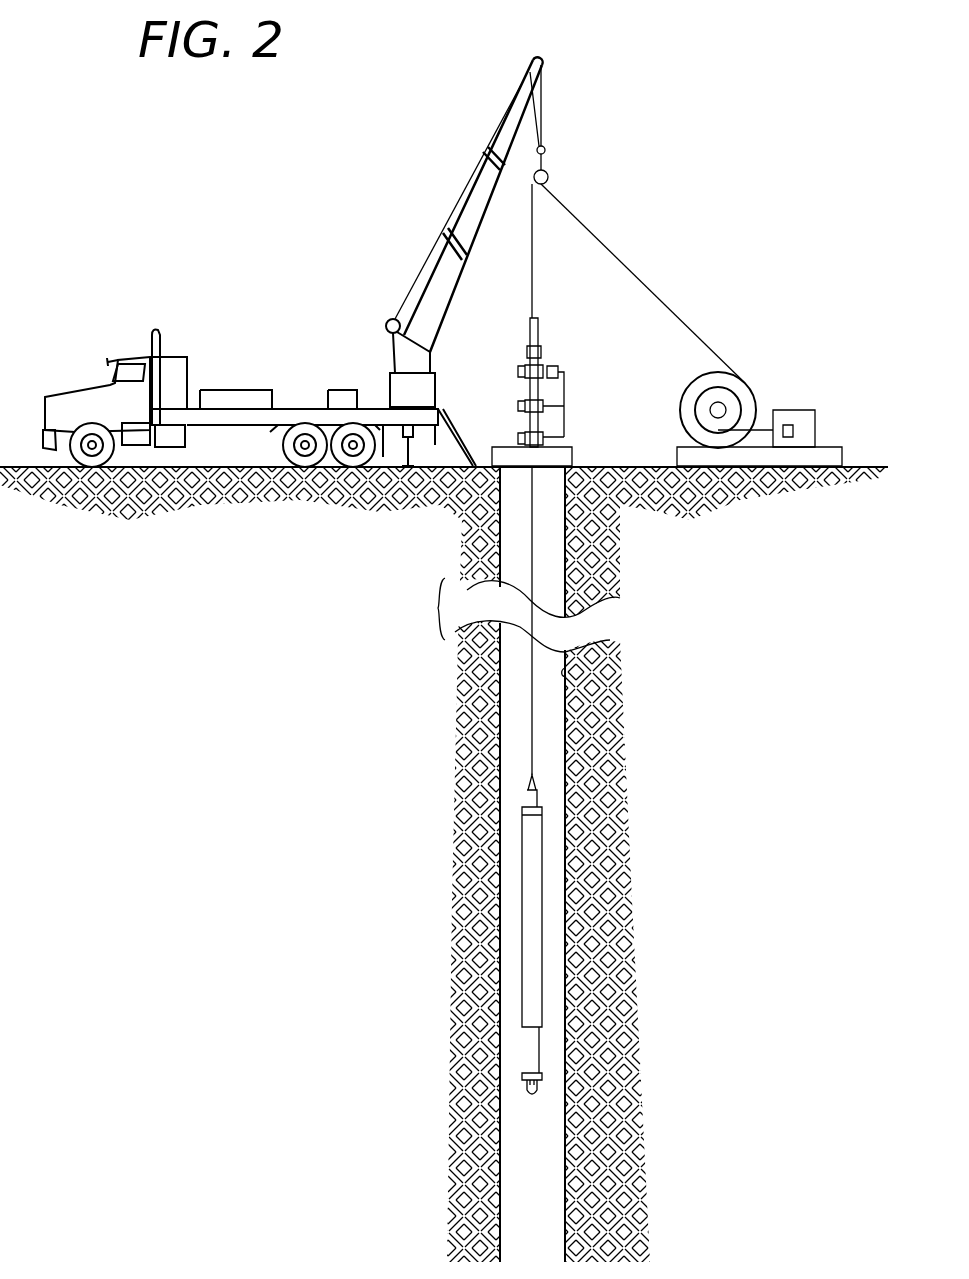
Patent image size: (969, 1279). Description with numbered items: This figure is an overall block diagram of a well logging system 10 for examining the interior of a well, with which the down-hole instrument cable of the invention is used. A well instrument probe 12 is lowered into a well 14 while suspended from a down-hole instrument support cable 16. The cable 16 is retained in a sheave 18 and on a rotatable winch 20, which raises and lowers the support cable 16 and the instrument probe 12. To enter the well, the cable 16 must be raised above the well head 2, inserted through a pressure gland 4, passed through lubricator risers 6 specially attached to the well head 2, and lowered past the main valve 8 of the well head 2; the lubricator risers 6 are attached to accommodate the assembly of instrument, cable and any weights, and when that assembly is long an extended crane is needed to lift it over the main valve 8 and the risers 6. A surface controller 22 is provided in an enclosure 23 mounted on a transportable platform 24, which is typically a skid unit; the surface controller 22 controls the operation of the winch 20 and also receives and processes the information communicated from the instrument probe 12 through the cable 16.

The well head 2 is at (538, 387).
The pressure gland 4 is at (532, 318).
The lubricator risers 6 is at (527, 341).
The main valve 8 is at (520, 436).
The well logging system 10 is at (815, 275).
The well instrument probe 12 is at (512, 944).
The well 14 is at (567, 672).
The down-hole instrument support cable 16 is at (532, 705).
The sheave 18 is at (548, 177).
The rotatable winch 20 is at (692, 378).
The surface controller 22 is at (786, 426).
The enclosure 23 is at (810, 410).
The transportable platform 24 is at (830, 447).